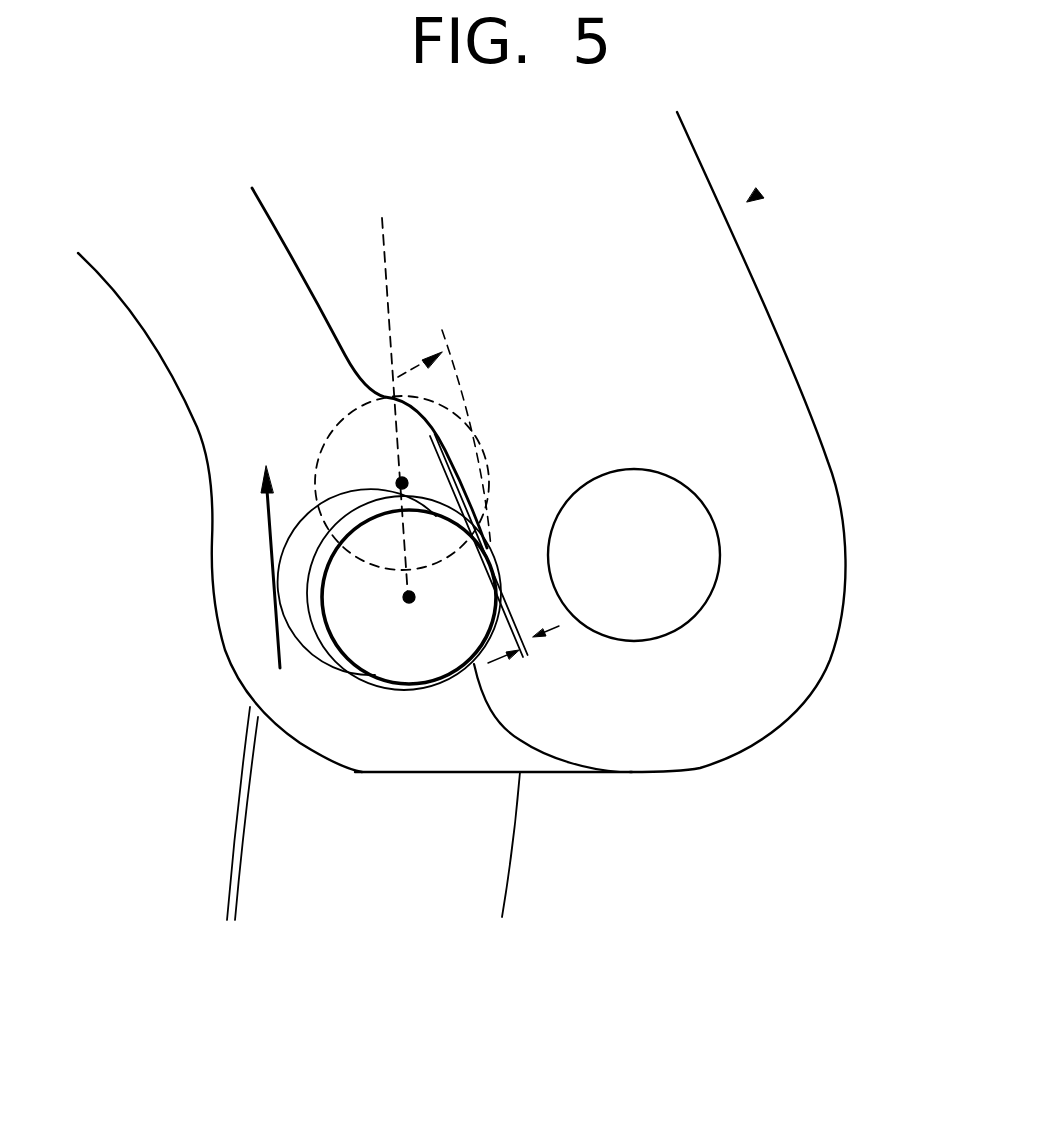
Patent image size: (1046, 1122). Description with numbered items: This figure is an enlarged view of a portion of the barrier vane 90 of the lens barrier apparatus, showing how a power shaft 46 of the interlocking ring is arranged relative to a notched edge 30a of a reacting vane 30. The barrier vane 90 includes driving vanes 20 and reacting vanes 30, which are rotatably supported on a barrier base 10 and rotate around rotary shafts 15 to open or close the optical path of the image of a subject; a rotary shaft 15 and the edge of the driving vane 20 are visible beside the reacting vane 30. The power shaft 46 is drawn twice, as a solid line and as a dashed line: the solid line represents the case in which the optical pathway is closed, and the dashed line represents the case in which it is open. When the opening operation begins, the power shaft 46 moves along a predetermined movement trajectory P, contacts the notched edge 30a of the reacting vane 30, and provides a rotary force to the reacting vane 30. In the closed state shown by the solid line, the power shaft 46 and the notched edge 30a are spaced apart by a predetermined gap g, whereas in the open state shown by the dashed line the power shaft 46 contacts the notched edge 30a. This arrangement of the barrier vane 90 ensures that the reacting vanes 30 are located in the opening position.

The barrier base 10 is at (497, 880).
The rotary shaft 15 is at (657, 620).
The driving vane 20 is at (167, 335).
The reacting vane 30 is at (737, 300).
The notched edge 30a is at (460, 388).
The power shaft 46 is at (327, 428).
The barrier vane 90 is at (750, 200).
The movement trajectory P is at (387, 285).
The gap g is at (523, 654).